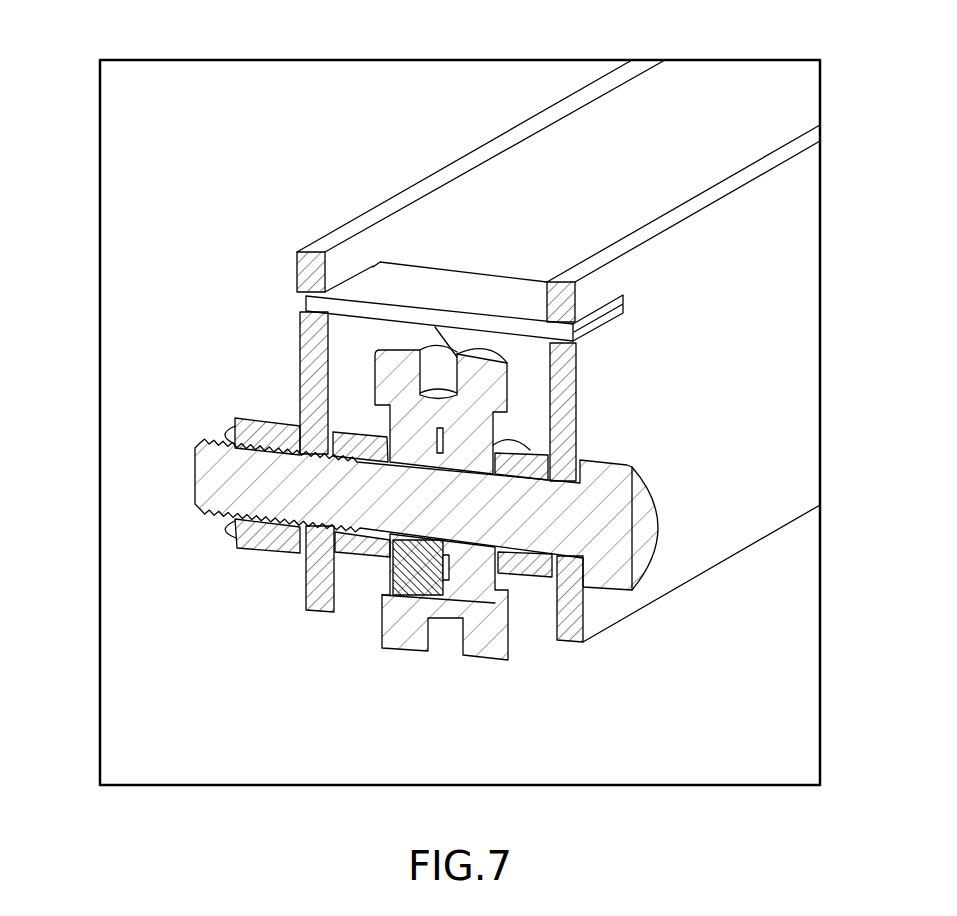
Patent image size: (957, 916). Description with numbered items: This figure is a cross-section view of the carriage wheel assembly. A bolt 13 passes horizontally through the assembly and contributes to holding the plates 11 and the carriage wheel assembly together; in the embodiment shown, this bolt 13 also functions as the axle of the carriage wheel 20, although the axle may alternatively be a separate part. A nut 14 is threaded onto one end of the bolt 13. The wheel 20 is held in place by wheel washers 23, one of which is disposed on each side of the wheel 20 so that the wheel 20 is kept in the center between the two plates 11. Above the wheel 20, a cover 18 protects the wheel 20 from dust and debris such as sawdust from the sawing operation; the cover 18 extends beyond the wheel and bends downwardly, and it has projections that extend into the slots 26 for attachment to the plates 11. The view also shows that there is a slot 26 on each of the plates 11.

The plates 11 is at (648, 230).
The bolt 13 is at (200, 476).
The nut 14 is at (272, 428).
The cover 18 is at (450, 290).
The wheel 20 is at (483, 645).
The wheel washer 23 is at (393, 578).
The slot 26 is at (305, 298).